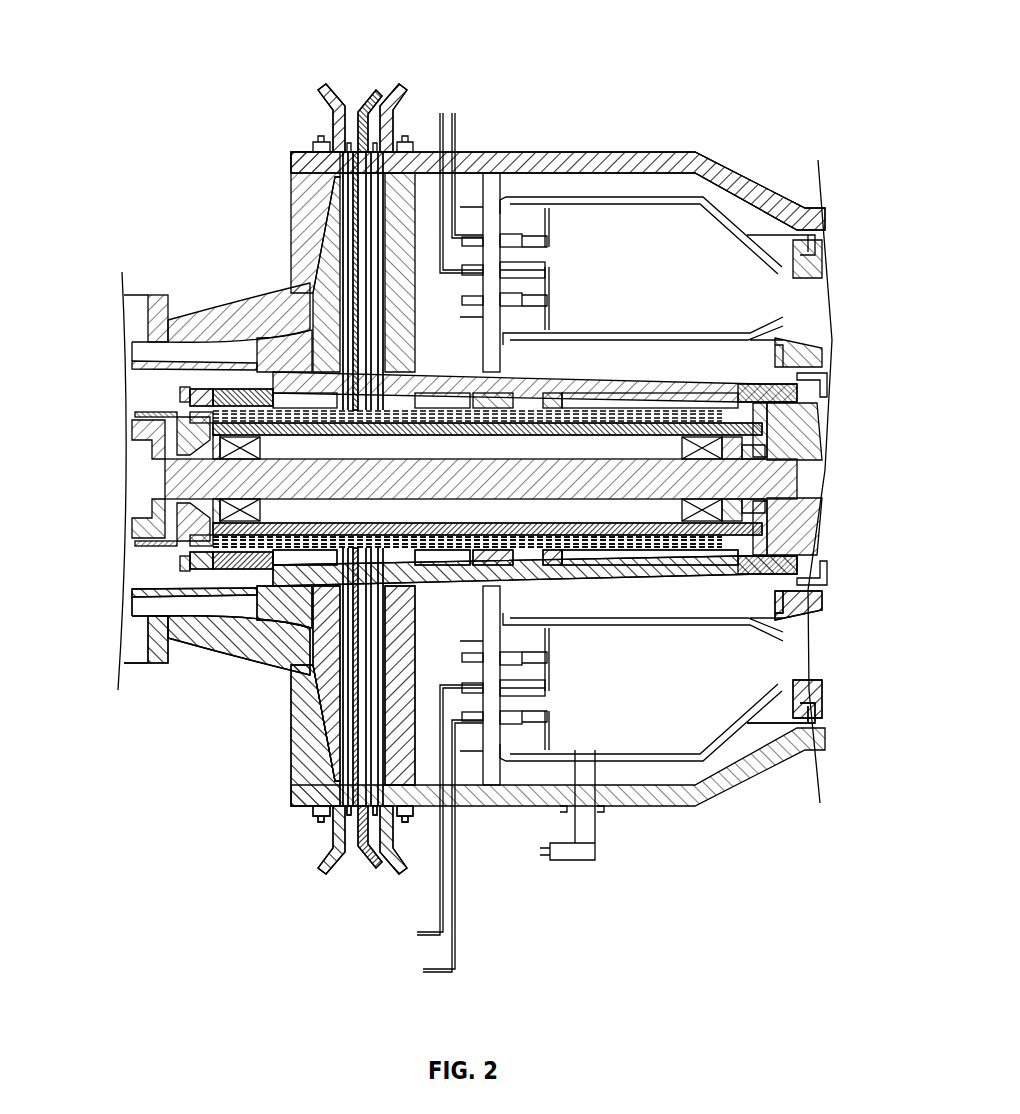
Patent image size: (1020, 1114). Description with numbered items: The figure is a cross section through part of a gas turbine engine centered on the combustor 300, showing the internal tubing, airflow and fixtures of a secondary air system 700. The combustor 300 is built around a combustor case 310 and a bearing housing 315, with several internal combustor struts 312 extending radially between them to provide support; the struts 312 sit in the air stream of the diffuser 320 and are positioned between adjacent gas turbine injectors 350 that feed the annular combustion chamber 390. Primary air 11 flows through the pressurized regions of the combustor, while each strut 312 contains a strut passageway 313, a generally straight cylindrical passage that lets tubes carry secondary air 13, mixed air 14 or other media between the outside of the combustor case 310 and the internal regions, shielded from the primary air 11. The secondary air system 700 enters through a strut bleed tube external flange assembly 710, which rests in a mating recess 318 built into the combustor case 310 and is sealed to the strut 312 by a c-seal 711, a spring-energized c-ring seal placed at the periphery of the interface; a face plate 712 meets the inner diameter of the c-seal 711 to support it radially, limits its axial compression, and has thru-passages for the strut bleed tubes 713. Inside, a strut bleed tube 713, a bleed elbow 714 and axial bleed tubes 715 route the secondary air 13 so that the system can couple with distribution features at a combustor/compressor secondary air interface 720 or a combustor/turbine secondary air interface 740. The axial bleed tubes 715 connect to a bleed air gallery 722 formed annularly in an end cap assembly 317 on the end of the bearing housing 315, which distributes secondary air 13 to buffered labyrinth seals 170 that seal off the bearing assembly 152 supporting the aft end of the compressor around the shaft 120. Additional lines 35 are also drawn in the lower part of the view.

The combustor 300 is at (742, 60).
The secondary air system 700 is at (330, 40).
The strut bleed tube external flange assembly 710 is at (355, 100).
The secondary air 13 is at (322, 92).
The mixed air 14 is at (325, 868).
The internal combustor strut 312 is at (443, 173).
The combustor case 310 is at (584, 152).
The mating recess 318 is at (292, 185).
The strut passageway 313 is at (362, 268).
The diffuser 320 is at (308, 298).
The primary air 11 is at (240, 347).
The combustion chamber 390 is at (611, 208).
The gas turbine injector 350 is at (463, 263).
The end cap assembly 317 is at (188, 398).
The bearing housing 315 is at (640, 383).
The buffered labyrinth seals 170 is at (770, 463).
The bearing assembly 152 is at (245, 455).
The bleed elbow 714 is at (400, 489).
The shaft 120 is at (543, 497).
The combustor/turbine secondary air interface 740 is at (800, 590).
The combustor/compressor secondary air interface 720 is at (210, 567).
The axial bleed tubes 715 is at (215, 632).
The bleed air gallery 722 is at (200, 610).
The strut bleed tube 713 is at (300, 660).
The face plate 712 is at (342, 803).
The c-seal 711 is at (332, 820).
The fluid lines 35 is at (418, 969).